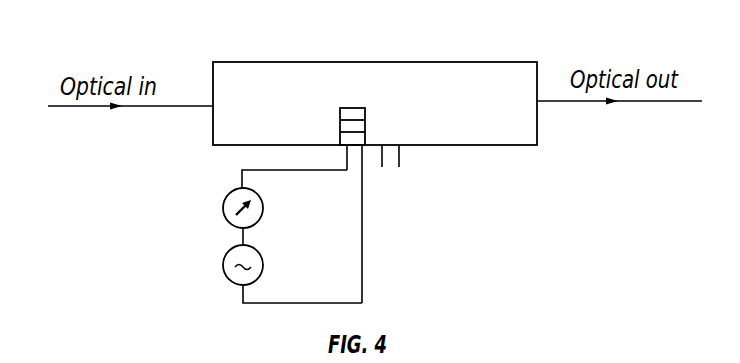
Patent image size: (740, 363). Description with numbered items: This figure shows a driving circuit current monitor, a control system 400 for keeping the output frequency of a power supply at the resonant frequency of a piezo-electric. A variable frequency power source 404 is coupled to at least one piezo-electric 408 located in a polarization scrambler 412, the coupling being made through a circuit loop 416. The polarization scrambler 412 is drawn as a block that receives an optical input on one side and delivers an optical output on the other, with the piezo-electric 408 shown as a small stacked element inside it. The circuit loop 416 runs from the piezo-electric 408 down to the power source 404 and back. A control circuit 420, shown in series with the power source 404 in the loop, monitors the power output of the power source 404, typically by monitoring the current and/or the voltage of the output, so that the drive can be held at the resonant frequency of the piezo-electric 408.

The optical device / modulator 400 is at (324, 117).
The variable frequency power source 404 is at (205, 269).
The piezo-electric 408 is at (387, 86).
The polarization scrambler 412 is at (485, 58).
The circuit loop 416 is at (324, 201).
The control circuit 420 is at (205, 212).